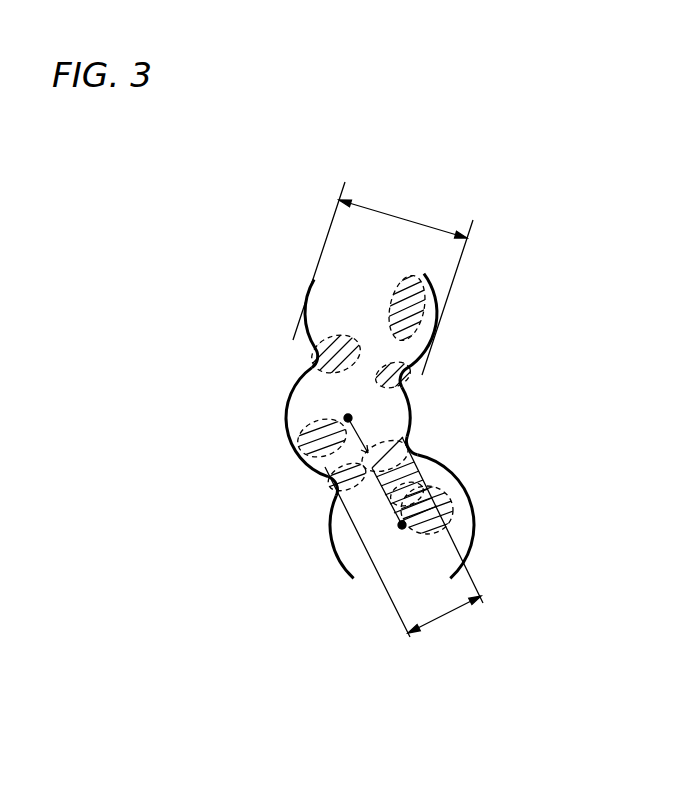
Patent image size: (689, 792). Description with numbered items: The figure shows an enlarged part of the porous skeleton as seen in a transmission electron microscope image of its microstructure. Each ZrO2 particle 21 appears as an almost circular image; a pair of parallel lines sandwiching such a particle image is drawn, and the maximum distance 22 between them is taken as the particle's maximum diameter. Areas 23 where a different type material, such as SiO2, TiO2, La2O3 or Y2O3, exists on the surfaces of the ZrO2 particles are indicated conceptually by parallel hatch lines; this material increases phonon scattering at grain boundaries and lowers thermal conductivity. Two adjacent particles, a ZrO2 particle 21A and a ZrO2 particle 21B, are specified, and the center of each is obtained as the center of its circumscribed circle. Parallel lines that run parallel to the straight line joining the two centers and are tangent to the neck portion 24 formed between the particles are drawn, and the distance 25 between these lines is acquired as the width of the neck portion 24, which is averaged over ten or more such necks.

The ZrO2 particle 21 is at (313, 295).
The ZrO2 particle 21A is at (290, 410).
The ZrO2 particle 21B is at (342, 551).
The maximum distance 22 is at (405, 217).
The areas in which the different type material exist 23 is at (313, 357).
The neck portion 24 is at (433, 432).
The distance 25 is at (445, 612).